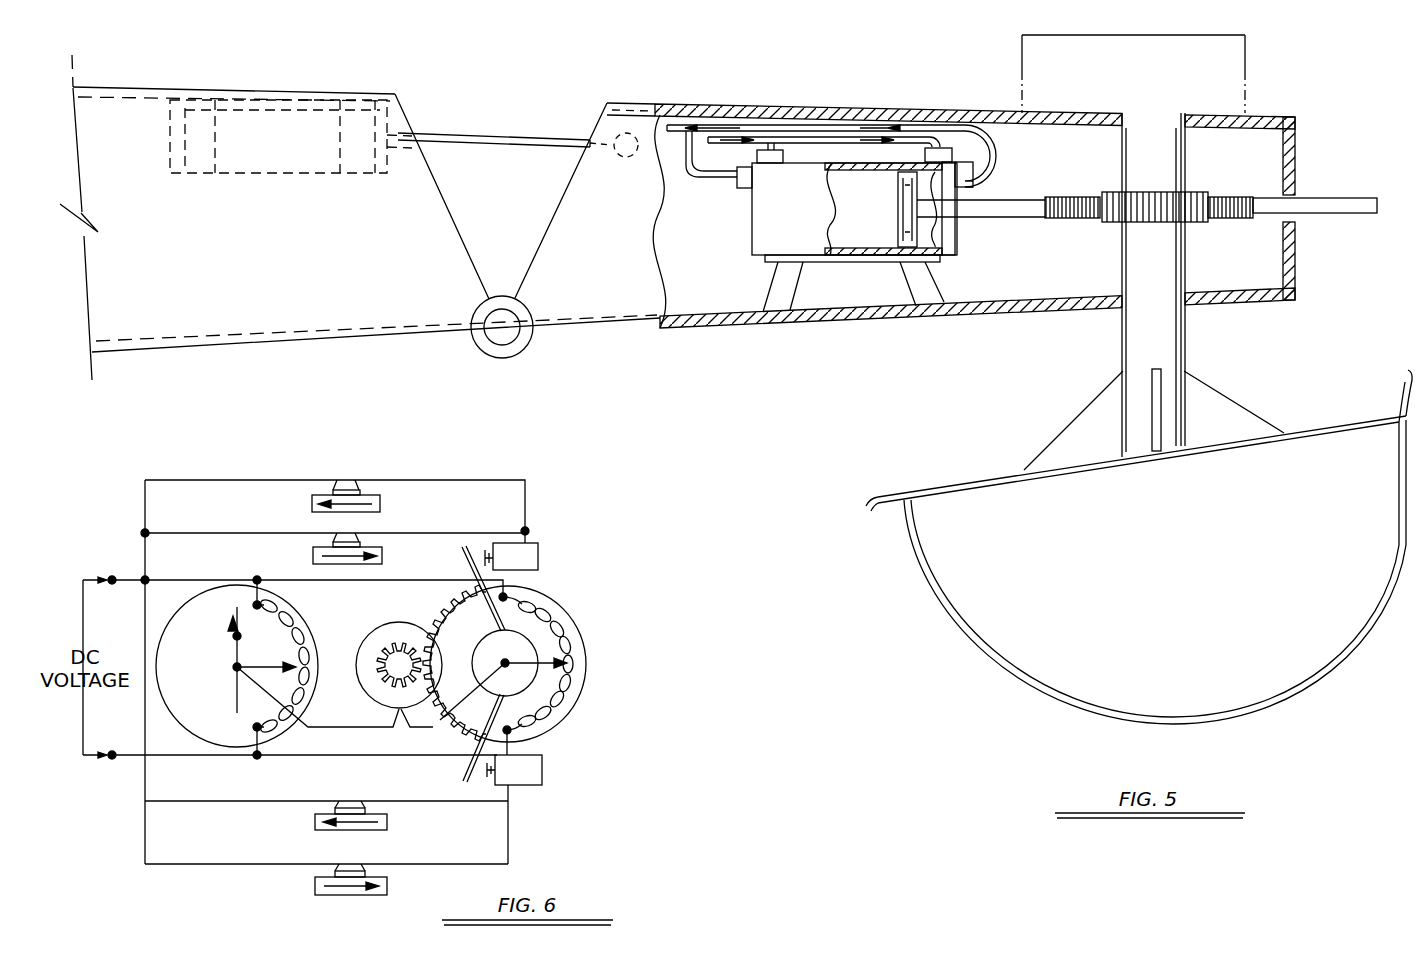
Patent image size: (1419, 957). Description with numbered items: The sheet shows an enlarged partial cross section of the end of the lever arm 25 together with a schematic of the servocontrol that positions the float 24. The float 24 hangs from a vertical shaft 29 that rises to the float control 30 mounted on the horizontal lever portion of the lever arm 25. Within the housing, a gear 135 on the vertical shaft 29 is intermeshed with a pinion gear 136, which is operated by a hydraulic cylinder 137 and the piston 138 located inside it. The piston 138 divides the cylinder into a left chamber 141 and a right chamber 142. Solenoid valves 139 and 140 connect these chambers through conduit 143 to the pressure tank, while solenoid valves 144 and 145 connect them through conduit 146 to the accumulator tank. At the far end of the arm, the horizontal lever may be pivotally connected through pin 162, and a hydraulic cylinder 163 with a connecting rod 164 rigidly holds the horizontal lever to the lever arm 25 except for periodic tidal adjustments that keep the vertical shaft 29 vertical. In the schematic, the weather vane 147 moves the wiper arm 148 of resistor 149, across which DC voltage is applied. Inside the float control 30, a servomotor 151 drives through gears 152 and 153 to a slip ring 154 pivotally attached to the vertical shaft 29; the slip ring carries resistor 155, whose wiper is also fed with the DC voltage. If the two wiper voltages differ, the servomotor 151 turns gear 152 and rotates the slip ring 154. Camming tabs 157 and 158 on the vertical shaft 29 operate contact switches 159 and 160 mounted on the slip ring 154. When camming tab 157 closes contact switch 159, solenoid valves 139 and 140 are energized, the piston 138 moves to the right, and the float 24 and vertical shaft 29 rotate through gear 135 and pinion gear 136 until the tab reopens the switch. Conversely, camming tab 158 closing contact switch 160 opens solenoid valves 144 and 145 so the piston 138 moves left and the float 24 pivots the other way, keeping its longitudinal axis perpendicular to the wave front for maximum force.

In FIG. 5, the float 24 is at (1190, 583).
In FIG. 5, the lever arm 25 is at (281, 347).
In FIG. 5, the vertical shaft 29 is at (1168, 334).
In FIG. 6, the vertical shaft 29 is at (473, 670).
In FIG. 5, the float control 30 is at (1022, 52).
In FIG. 5, the gear 135 is at (1112, 194).
In FIG. 5, the pinion gear 136 is at (1082, 218).
In FIG. 5, the hydraulic cylinder 137 is at (857, 270).
In FIG. 5, the piston 138 is at (897, 181).
In FIG. 5, the solenoid valve 139 is at (774, 158).
In FIG. 6, the solenoid valve 139 is at (310, 503).
In FIG. 5, the solenoid valve 140 is at (976, 182).
In FIG. 6, the solenoid valve 140 is at (312, 556).
In FIG. 5, the left chamber 141 is at (856, 220).
In FIG. 5, the right chamber 142 is at (932, 233).
In FIG. 5, the conduit 143 is at (711, 144).
In FIG. 5, the solenoid valve 144 is at (742, 190).
In FIG. 6, the solenoid valve 144 is at (315, 825).
In FIG. 5, the solenoid valve 145 is at (946, 148).
In FIG. 6, the solenoid valve 145 is at (315, 887).
In FIG. 5, the conduit 146 is at (699, 126).
In FIG. 6, the weather vane 147 is at (237, 652).
In FIG. 6, the wiper arm 148 is at (258, 662).
In FIG. 6, the resistor 149 is at (292, 633).
In FIG. 6, the servomotor 151 is at (400, 621).
In FIG. 6, the gear 152 is at (383, 673).
In FIG. 6, the gear 153 is at (441, 621).
In FIG. 6, the slip ring 154 is at (573, 618).
In FIG. 6, the resistor 155 is at (578, 669).
In FIG. 6, the camming tab 157 is at (465, 557).
In FIG. 6, the camming tab 158 is at (466, 764).
In FIG. 6, the contact switch 159 is at (538, 558).
In FIG. 6, the contact switch 160 is at (542, 770).
In FIG. 5, the pin 162 is at (502, 340).
In FIG. 5, the hydraulic cylinder 163 is at (305, 98).
In FIG. 5, the connecting rod 164 is at (500, 134).